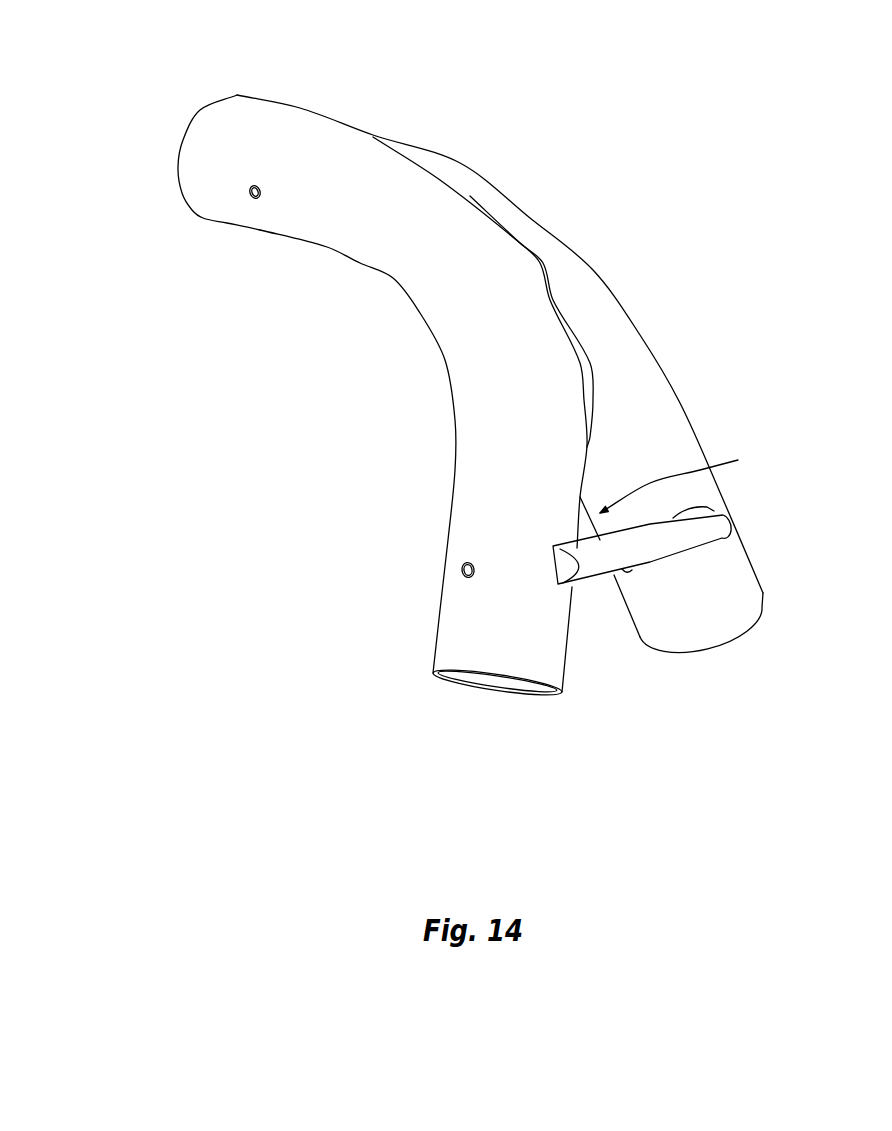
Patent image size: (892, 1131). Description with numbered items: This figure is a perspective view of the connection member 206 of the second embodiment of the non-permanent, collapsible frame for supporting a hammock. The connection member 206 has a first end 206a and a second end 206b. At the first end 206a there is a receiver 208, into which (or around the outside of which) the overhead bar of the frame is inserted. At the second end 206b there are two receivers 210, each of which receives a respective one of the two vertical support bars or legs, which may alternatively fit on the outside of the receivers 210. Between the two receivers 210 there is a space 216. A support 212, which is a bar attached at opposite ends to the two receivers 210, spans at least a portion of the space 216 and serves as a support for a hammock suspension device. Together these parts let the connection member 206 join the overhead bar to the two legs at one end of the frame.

The connection member 206 is at (680, 165).
The first end 206a is at (170, 187).
The second end 206b is at (630, 707).
The receiver 208 is at (249, 97).
The receivers 210 is at (463, 473).
The support 212 is at (718, 517).
The space 216 is at (682, 480).